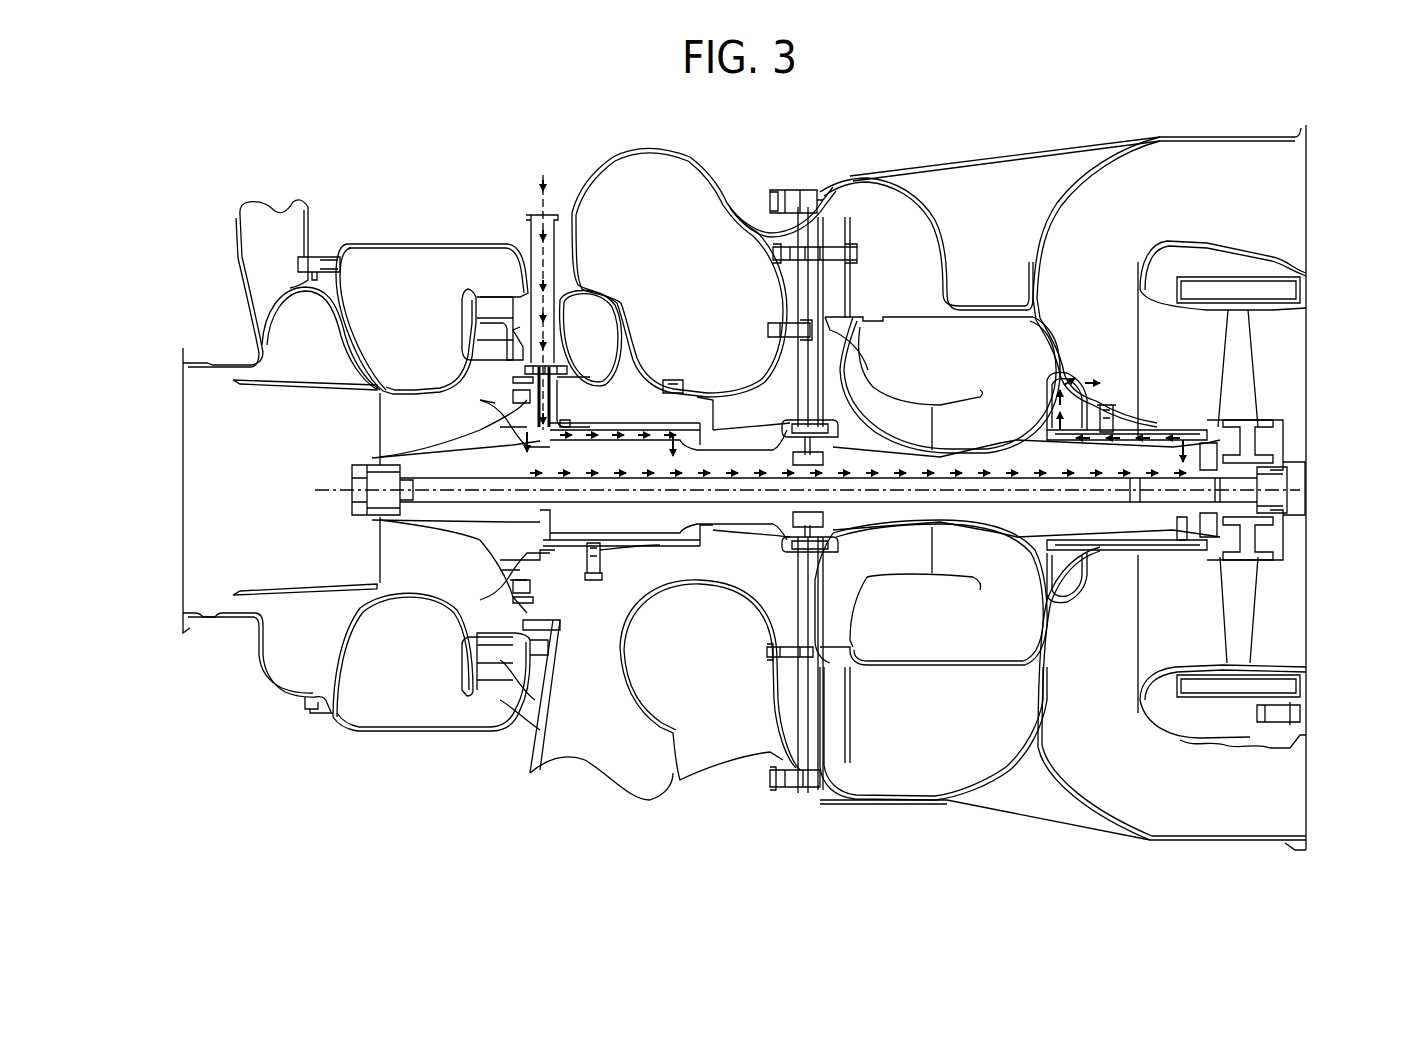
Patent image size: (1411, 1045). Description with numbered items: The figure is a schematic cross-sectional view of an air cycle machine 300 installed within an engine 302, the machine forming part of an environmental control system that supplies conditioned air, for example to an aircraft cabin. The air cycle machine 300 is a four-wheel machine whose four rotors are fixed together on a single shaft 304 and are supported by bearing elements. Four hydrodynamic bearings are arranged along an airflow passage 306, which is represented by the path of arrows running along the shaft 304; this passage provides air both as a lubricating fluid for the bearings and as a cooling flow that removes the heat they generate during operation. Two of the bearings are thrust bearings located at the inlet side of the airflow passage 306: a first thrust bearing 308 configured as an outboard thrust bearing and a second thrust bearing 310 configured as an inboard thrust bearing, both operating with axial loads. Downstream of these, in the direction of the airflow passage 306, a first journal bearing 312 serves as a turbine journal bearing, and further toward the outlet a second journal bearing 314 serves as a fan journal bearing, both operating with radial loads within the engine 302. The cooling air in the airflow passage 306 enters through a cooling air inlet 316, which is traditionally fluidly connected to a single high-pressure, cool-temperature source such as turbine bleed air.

The air cycle machine 300 is at (254, 148).
The engine 302 is at (192, 360).
The shaft 304 is at (347, 487).
The airflow passage 306 is at (540, 267).
The first thrust bearing 308 is at (537, 383).
The second thrust bearing 310 is at (550, 397).
The first journal bearing 312 is at (625, 440).
The second journal bearing 314 is at (1148, 436).
The cooling air inlet 316 is at (530, 230).